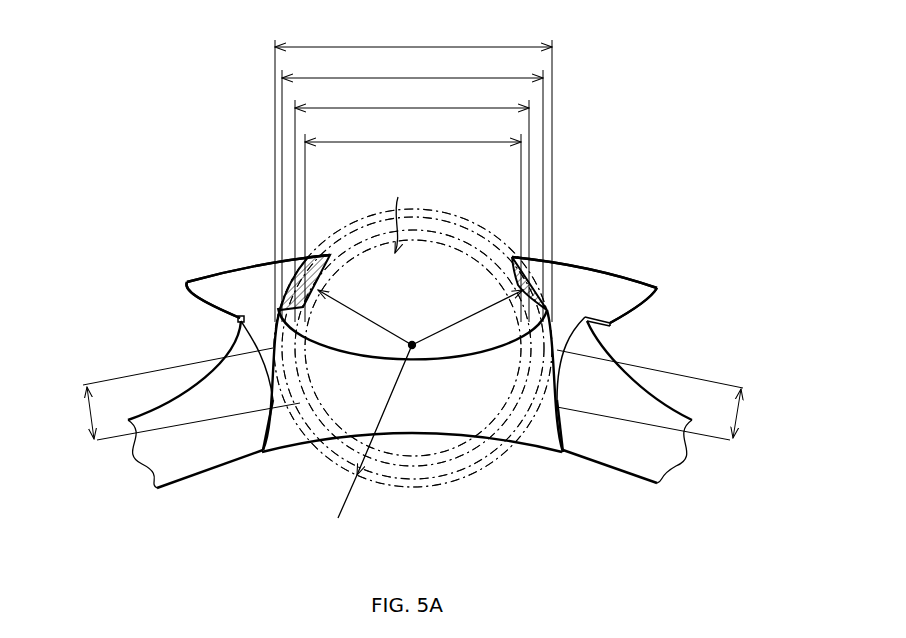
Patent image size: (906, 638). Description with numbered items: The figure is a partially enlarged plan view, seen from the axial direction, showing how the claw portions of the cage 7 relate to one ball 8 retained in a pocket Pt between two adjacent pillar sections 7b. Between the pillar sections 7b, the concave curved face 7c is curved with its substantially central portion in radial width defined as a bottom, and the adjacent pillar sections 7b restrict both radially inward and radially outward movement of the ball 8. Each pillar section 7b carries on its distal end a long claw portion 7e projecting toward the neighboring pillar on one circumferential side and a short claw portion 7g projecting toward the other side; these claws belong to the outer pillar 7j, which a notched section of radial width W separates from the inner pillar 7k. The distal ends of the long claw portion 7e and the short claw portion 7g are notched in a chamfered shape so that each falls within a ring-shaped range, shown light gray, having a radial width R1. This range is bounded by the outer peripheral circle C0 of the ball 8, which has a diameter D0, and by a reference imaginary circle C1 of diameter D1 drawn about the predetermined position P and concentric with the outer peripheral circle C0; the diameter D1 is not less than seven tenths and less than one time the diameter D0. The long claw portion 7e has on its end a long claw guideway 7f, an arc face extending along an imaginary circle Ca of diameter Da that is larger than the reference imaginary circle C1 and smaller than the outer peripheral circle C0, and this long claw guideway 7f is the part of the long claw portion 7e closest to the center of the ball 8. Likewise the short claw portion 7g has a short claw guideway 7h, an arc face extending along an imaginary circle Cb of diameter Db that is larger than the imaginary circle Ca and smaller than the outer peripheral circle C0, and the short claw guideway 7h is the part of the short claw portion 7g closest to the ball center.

The cage 7 is at (113, 172).
The pillar section 7b is at (249, 264).
The concave curved face 7c is at (443, 406).
The long claw portion 7e is at (323, 255).
The long claw guideway 7f is at (337, 281).
The short claw portion 7g is at (203, 288).
The short claw guideway 7h is at (505, 272).
The outer pillar 7j is at (252, 343).
The inner pillar 7k is at (282, 442).
The ball 8 is at (426, 200).
The predetermined position P is at (412, 340).
The pocket Pt is at (395, 214).
The radial width R1 is at (338, 518).
The outer peripheral circle C0 is at (380, 485).
The imaginary circle Cb is at (407, 480).
The imaginary circle Ca is at (438, 484).
The reference imaginary circle C1 is at (473, 481).
The diameter D0 is at (413, 171).
The diameter Db is at (412, 187).
The diameter Da is at (412, 202).
The diameter D1 is at (413, 219).
The radial width W is at (408, 394).